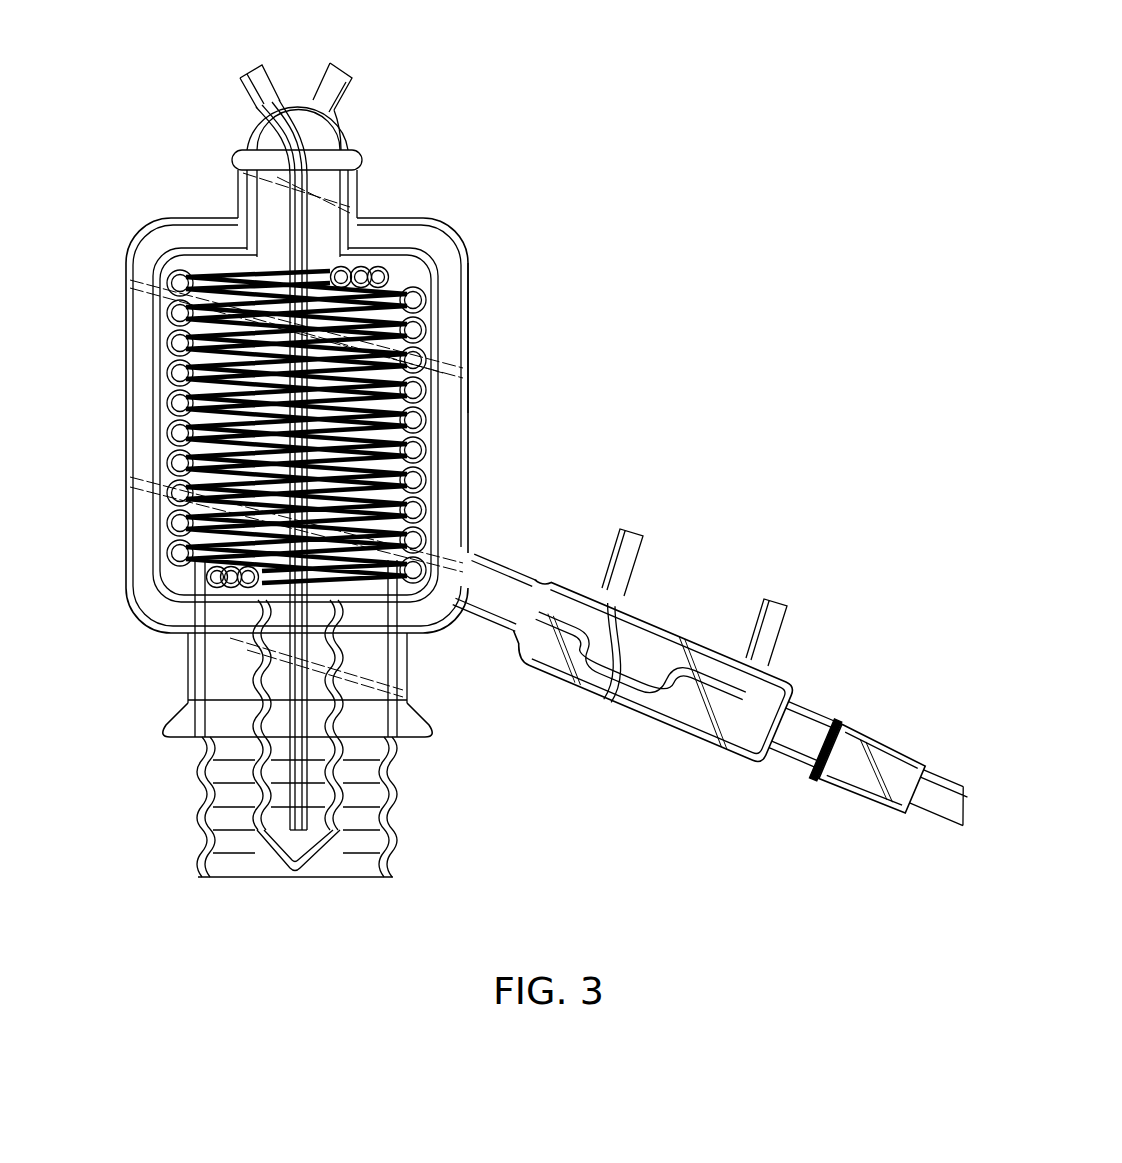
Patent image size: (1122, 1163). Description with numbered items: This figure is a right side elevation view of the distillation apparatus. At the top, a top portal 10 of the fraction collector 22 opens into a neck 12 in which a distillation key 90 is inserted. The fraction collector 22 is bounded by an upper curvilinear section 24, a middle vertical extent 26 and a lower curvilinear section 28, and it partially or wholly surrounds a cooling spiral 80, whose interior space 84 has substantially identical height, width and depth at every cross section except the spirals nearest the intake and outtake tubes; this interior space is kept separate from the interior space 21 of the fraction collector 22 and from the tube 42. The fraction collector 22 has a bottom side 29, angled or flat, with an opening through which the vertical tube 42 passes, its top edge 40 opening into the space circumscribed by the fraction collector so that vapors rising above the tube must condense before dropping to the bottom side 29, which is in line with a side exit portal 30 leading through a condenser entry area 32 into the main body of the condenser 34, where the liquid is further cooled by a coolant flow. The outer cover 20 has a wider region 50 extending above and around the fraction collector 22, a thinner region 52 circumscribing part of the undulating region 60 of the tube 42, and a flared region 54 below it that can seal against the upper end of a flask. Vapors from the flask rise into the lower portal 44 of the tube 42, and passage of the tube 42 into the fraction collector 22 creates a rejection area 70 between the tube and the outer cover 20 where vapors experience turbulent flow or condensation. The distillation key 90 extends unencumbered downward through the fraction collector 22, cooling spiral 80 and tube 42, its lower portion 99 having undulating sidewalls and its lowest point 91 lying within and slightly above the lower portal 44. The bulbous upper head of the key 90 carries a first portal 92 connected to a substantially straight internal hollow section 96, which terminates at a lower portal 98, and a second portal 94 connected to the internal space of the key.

The top portal 10 is at (335, 248).
The neck 12 is at (357, 193).
The outer cover 20 is at (147, 240).
The interior space 21 is at (432, 263).
The fraction collector 22 is at (205, 254).
The upper curvilinear section 24 is at (415, 330).
The middle vertical extent 26 is at (413, 390).
The lower curvilinear section 28 is at (163, 590).
The bottom side 29 is at (193, 602).
The side exit portal 30 is at (460, 587).
The condenser entry area 32 is at (492, 573).
The condenser 34 is at (678, 633).
The top edge 40 is at (200, 545).
The tube 42 is at (435, 573).
The lower portal 44 is at (255, 878).
The wider region 50 is at (463, 500).
The thinner region 52 is at (187, 662).
The flared region 54 is at (433, 735).
The undulating region 60 is at (393, 835).
The rejection area 70 is at (415, 640).
The cooling spiral 80 is at (468, 413).
The interior space 84 is at (433, 340).
The distillation key 90 is at (294, 108).
The lowest point 91 is at (297, 872).
The first portal 92 is at (243, 78).
The second portal 94 is at (347, 88).
The internal hollow section 96 is at (297, 448).
The lower portal 98 is at (302, 833).
The lower portion 99 is at (253, 782).